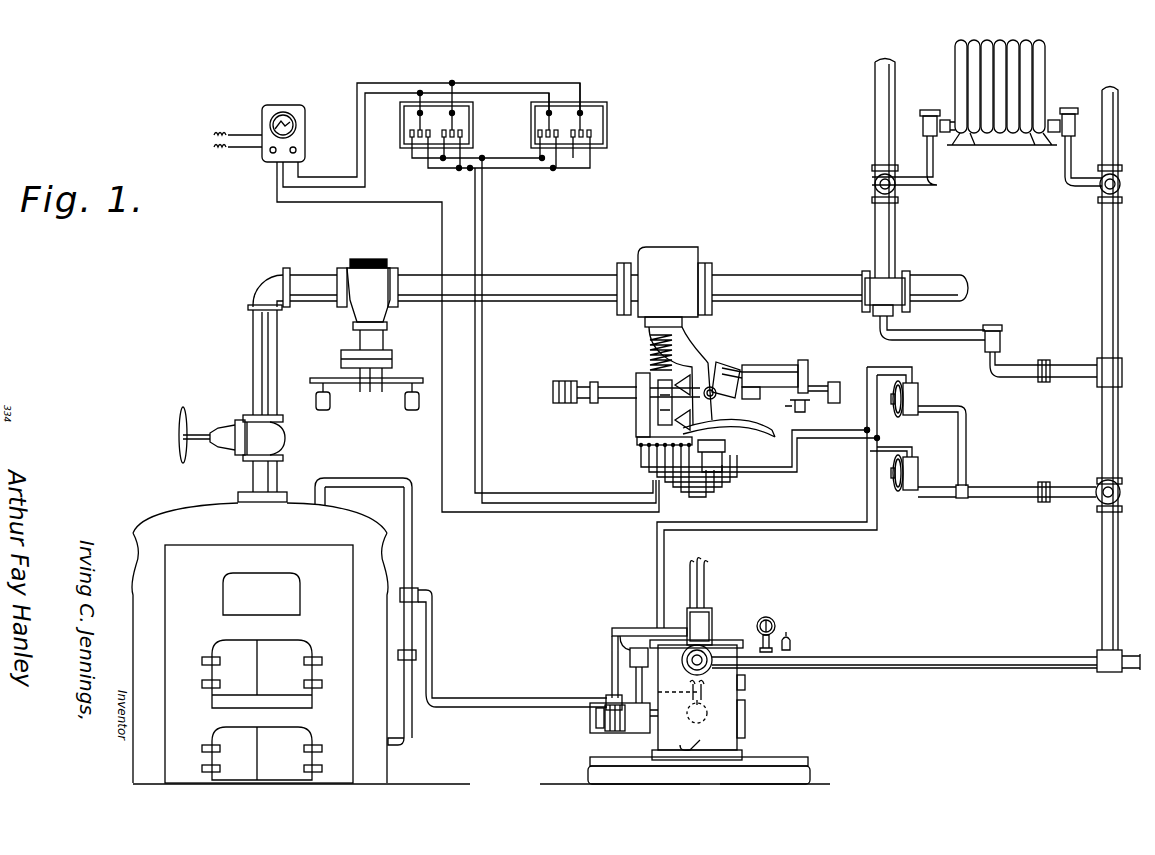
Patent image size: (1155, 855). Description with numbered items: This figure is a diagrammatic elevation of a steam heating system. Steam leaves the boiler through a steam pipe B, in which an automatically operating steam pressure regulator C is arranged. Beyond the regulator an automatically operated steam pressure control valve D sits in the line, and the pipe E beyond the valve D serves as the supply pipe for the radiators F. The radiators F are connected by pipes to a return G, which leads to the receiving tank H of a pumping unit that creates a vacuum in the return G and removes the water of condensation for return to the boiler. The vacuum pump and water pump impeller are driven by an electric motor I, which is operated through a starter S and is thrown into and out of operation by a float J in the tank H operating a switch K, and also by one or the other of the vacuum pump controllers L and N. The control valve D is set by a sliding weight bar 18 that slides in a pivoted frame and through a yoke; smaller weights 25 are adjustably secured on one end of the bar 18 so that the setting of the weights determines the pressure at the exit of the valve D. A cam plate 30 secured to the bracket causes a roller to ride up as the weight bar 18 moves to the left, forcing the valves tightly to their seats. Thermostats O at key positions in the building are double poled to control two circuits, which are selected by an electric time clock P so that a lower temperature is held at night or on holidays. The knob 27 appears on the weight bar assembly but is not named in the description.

The electric time clock P is at (283, 105).
The thermostats O is at (473, 125).
The steam pipe B is at (258, 363).
The steam pressure regulator C is at (380, 275).
The steam pressure control valve D is at (676, 275).
The sliding weight bar 18 is at (617, 370).
The adjusting knob 27 is at (556, 405).
The smaller weights 25 is at (810, 400).
The cam plate 30 is at (742, 432).
The supply pipe E is at (904, 317).
The radiators F is at (1013, 132).
The return G is at (1103, 380).
The vacuum pump controller L is at (920, 395).
The vacuum pump controller N is at (983, 474).
The receiving tank H is at (778, 723).
The float J is at (884, 697).
The starter S is at (708, 620).
The switch K is at (630, 657).
The electric motor I is at (590, 728).